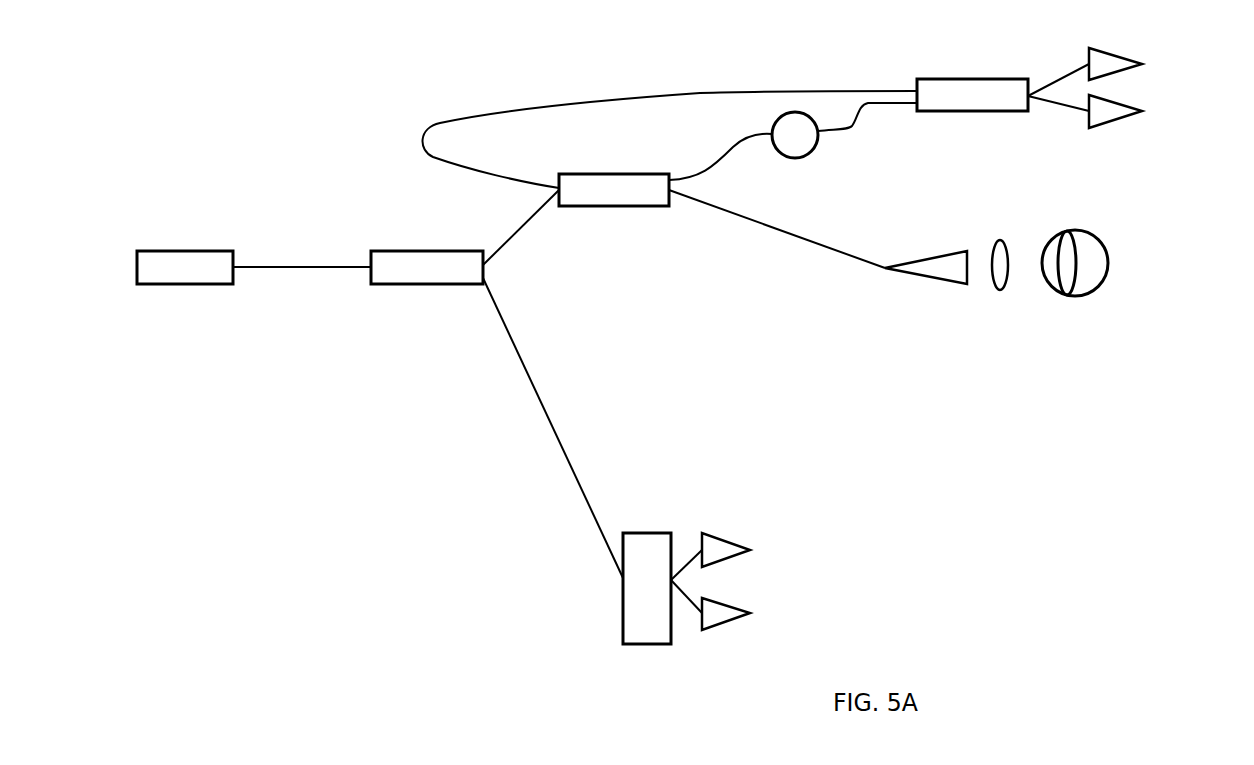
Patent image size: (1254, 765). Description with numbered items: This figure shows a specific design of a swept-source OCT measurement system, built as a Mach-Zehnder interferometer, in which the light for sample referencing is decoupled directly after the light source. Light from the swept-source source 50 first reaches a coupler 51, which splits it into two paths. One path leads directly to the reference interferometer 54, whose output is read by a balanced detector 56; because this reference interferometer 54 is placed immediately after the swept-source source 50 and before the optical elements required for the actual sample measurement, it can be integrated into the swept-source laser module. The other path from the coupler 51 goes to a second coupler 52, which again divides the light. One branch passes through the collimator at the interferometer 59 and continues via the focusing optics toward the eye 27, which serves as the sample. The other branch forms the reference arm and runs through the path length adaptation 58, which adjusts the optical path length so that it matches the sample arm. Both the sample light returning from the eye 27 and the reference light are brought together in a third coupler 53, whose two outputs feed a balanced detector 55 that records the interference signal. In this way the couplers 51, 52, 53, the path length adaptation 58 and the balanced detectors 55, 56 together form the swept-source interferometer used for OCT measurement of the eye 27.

The swept-source source 50 is at (254, 228).
The coupler 51 is at (497, 383).
The coupler 52 is at (670, 179).
The coupler 53 is at (972, 72).
The reference interferometer 54 is at (647, 588).
The balanced detector 55 is at (1114, 88).
The balanced detector 56 is at (733, 581).
The path length adaptation 58 is at (844, 143).
The collimator at the interferometer 59 is at (926, 279).
The eye 27 is at (1081, 263).